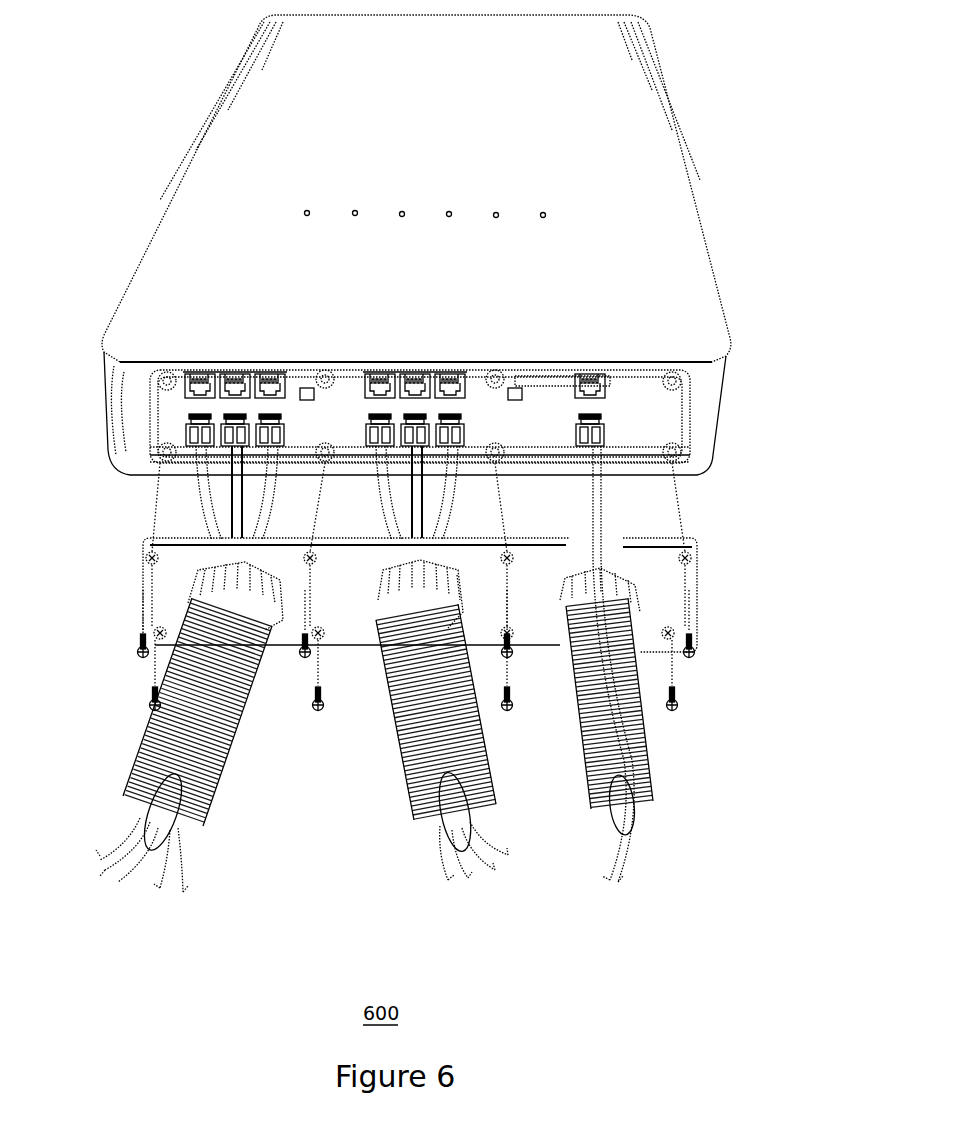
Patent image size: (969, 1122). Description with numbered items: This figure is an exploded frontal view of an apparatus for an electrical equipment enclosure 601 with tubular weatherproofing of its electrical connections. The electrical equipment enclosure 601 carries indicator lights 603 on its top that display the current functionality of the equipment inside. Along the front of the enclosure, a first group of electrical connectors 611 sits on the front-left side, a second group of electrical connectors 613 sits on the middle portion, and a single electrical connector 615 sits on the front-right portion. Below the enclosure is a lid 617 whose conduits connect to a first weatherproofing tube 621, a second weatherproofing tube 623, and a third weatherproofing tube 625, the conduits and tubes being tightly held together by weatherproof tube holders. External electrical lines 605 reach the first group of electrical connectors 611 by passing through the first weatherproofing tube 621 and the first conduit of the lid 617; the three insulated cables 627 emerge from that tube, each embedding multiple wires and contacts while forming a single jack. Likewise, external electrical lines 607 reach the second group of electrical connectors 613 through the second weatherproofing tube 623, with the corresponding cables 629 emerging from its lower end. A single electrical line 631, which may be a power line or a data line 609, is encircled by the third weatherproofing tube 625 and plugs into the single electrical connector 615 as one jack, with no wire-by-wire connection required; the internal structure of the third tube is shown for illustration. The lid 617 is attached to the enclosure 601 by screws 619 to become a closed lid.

The electrical equipment enclosure 601 is at (288, 110).
The indicator lights 603 is at (292, 201).
The external electrical lines reaching first group of connectors 605 is at (192, 485).
The external electrical lines reaching second group of connectors 607 is at (380, 507).
The data line reaching single connector 609 is at (605, 496).
The first group of electrical connectors 611 is at (233, 371).
The second group of electrical connectors 613 is at (416, 371).
The single electrical connector 615 is at (601, 371).
The lid 617 is at (665, 579).
The screws 619 is at (697, 653).
The first weatherproofing tube 621 is at (228, 777).
The second weatherproofing tube 623 is at (412, 797).
The third weatherproofing tube 625 is at (655, 757).
The insulated cables 627 is at (186, 873).
The second cable wires 629 is at (434, 872).
The single electrical line 631 is at (632, 849).